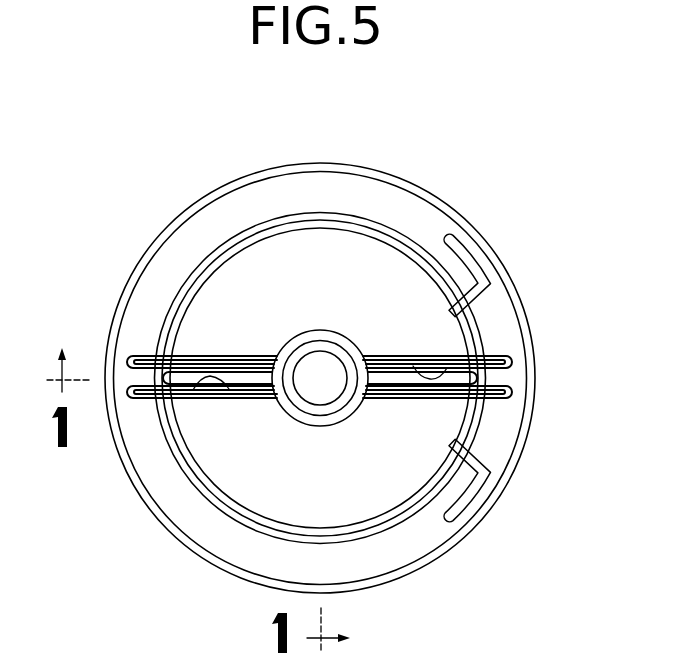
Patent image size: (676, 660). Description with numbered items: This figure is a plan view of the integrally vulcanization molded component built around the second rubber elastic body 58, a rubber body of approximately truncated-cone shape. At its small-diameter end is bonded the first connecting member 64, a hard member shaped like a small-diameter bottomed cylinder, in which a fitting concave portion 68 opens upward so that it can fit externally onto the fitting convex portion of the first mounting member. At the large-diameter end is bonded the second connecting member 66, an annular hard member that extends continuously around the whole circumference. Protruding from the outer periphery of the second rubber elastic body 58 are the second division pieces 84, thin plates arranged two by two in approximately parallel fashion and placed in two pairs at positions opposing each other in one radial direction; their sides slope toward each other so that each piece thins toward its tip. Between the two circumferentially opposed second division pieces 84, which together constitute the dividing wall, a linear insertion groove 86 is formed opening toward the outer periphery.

The second rubber elastic body 58 is at (381, 478).
The first connecting member 64 is at (311, 356).
The second connecting member 66 is at (180, 250).
The fitting concave portion 68 is at (310, 364).
The second division piece 84 is at (183, 368).
The insertion groove 86 is at (447, 368).